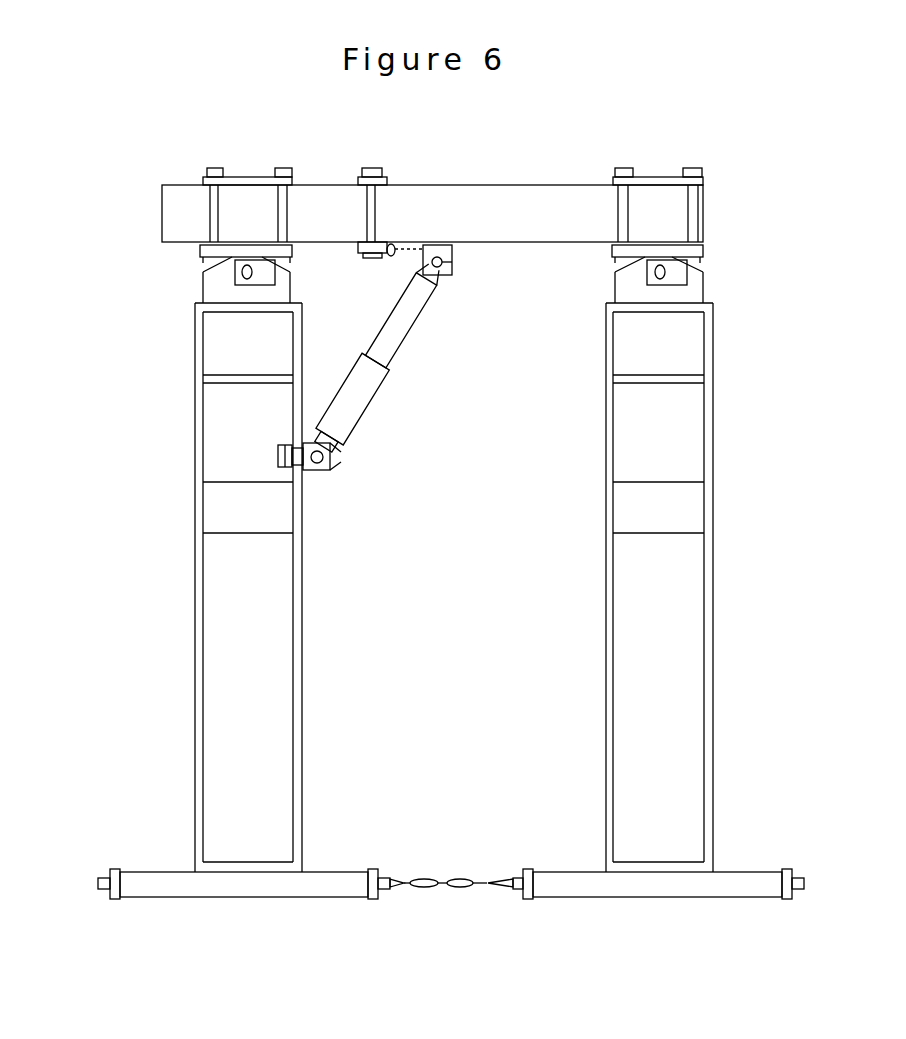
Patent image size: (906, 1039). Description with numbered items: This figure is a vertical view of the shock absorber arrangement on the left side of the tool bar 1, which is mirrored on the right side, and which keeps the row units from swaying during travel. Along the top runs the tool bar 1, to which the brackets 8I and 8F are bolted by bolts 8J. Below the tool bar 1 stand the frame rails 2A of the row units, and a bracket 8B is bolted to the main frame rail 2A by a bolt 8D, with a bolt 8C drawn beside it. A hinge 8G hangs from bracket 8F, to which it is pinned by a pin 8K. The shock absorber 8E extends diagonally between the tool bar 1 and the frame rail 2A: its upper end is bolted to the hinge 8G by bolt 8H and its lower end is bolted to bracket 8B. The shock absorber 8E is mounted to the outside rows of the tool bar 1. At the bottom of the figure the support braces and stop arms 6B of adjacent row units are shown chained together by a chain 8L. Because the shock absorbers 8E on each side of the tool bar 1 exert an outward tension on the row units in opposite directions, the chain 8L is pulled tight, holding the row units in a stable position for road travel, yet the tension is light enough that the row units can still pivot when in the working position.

The tool bar 1 is at (148, 208).
The frame rail 2A is at (309, 364).
The support braces and stop arm 6B is at (91, 871).
The bracket 8B is at (328, 473).
The bolt 8C is at (266, 455).
The bolt 8D is at (296, 476).
The shock absorber 8E is at (419, 358).
The bracket 8F is at (351, 254).
The hinge 8G is at (458, 264).
The bolt 8H is at (441, 266).
The bracket 8I is at (350, 172).
The bolt 8J is at (387, 212).
The pin 8K is at (389, 261).
The chain 8L is at (448, 893).